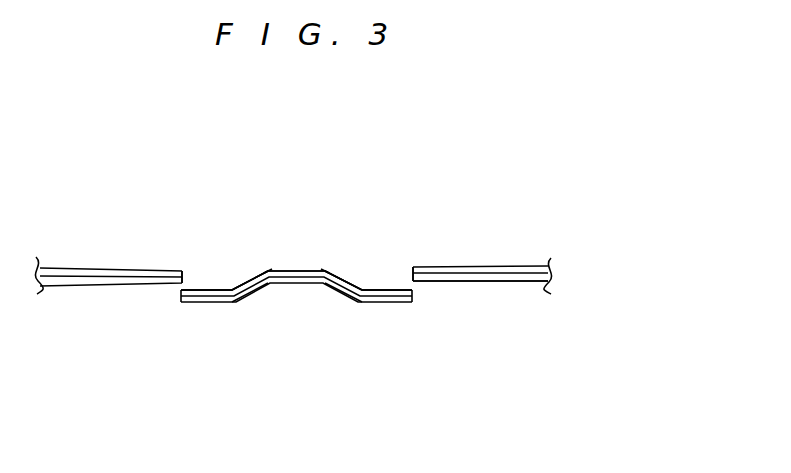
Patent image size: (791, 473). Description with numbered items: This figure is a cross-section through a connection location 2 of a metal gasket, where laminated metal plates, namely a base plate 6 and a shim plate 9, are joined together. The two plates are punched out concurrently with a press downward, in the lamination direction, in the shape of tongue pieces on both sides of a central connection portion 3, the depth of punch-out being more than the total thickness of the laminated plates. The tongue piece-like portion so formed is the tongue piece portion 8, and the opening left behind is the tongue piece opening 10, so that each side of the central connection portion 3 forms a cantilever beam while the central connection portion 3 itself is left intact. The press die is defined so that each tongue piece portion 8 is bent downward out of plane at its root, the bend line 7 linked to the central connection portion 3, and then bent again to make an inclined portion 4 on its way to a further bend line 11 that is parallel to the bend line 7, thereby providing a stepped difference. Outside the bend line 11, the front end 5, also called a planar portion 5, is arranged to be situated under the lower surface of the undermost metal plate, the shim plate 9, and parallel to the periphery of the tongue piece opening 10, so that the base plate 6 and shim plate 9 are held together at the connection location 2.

The connection location 2 is at (304, 184).
The central connection portion 3 is at (298, 270).
The inclined portion 4 is at (240, 288).
The front end 5 is at (203, 288).
The base plate 6 is at (112, 268).
The bend line 7 is at (270, 270).
The tongue piece portion 8 is at (241, 214).
The shim plate 9 is at (497, 281).
The tongue piece opening 10 is at (187, 288).
The bend line of the tongue piece portion 11 is at (228, 304).